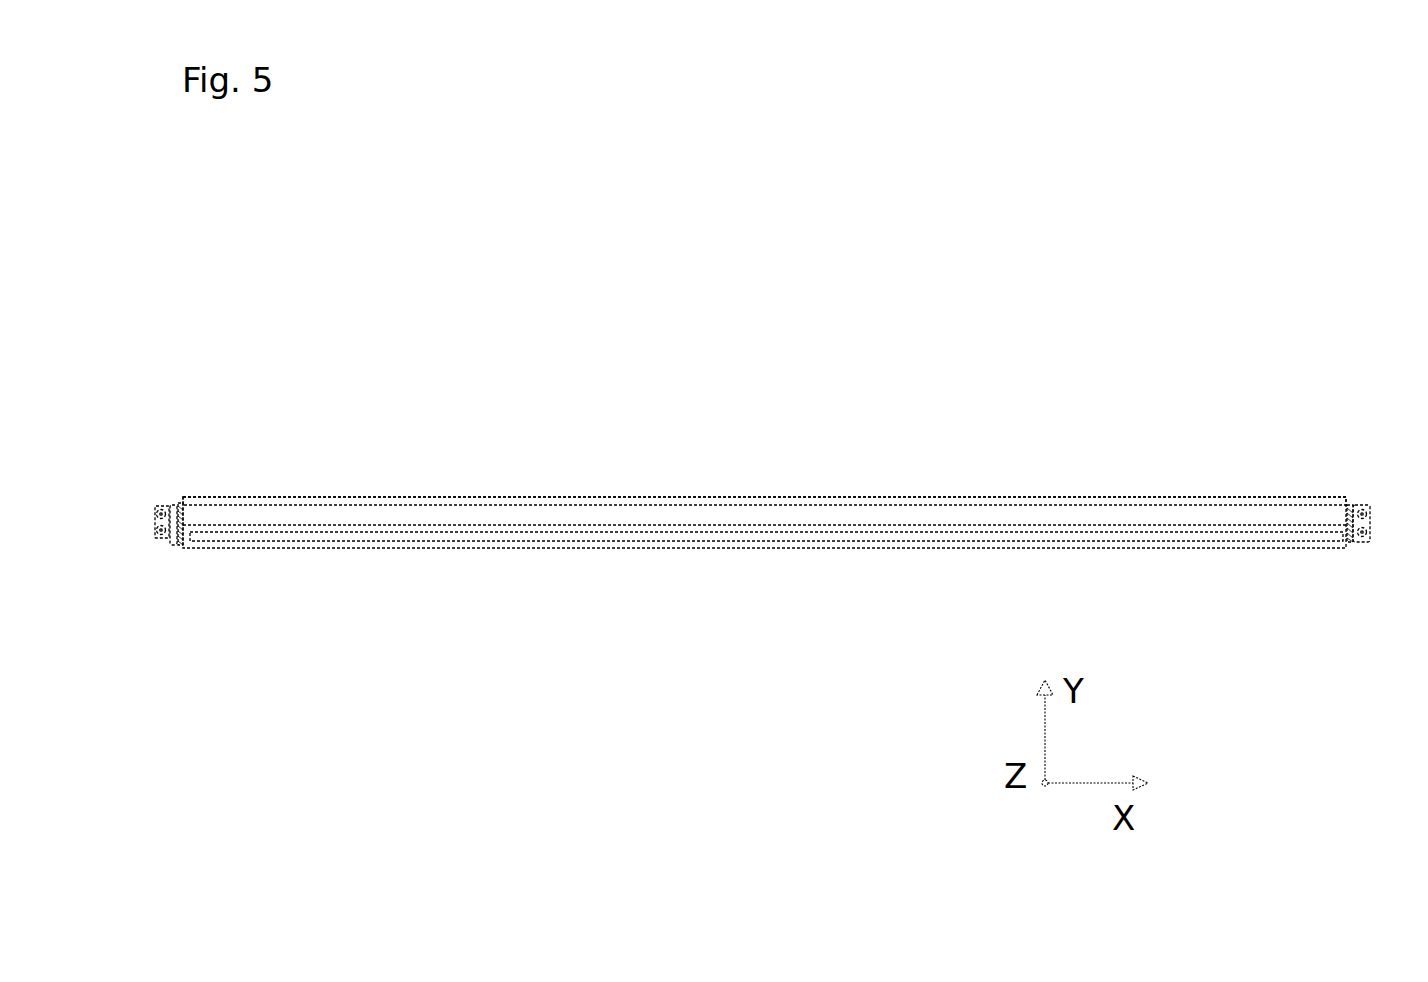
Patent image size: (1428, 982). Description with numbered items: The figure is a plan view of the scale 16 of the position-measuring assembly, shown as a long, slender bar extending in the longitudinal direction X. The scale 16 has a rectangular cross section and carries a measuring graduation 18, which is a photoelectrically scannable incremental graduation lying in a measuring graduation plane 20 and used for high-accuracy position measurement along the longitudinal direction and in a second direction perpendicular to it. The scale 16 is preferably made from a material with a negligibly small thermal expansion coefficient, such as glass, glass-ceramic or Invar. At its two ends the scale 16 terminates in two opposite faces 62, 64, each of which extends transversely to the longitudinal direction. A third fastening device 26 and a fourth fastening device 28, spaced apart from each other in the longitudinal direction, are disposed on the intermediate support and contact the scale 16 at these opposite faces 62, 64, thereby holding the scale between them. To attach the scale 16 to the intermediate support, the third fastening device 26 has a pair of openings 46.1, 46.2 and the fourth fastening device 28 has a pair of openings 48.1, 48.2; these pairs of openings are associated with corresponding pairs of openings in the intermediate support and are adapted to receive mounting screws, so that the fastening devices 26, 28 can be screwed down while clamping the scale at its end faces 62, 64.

The scale 16 is at (230, 548).
The measuring graduation 18 is at (435, 505).
The measuring graduation plane 20 is at (335, 535).
The third fastening device 26 is at (1353, 545).
The fourth fastening device 28 is at (168, 553).
The opening 46.1 is at (1365, 542).
The opening 46.2 is at (1365, 503).
The opening 48.1 is at (168, 545).
The opening 48.2 is at (158, 507).
The face 62 is at (1350, 500).
The face 64 is at (173, 507).